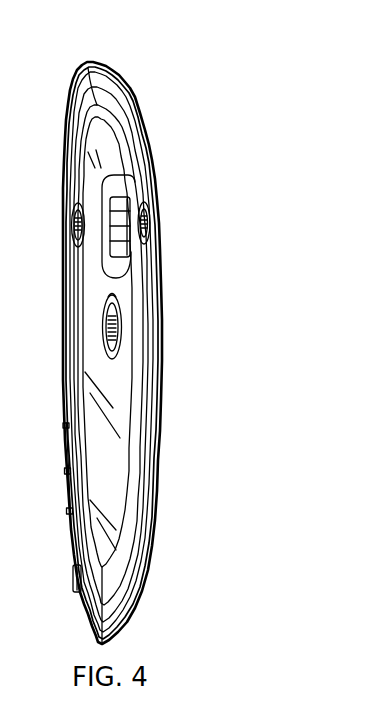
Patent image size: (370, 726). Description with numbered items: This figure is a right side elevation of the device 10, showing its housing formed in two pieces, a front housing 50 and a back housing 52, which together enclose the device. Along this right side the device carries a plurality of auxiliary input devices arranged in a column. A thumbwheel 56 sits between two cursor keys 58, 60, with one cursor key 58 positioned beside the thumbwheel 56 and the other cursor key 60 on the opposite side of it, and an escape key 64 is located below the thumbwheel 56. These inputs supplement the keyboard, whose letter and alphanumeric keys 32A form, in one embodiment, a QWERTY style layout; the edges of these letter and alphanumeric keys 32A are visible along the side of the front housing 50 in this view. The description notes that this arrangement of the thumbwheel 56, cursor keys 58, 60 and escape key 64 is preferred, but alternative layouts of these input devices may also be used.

The device 10 is at (224, 80).
The back housing 52 is at (140, 104).
The front housing 50 is at (66, 305).
The cursor key 60 is at (74, 241).
The cursor key 58 is at (152, 213).
The thumbwheel 56 is at (127, 260).
The escape key 64 is at (122, 321).
The letter and alphanumeric keys 32A is at (65, 442).